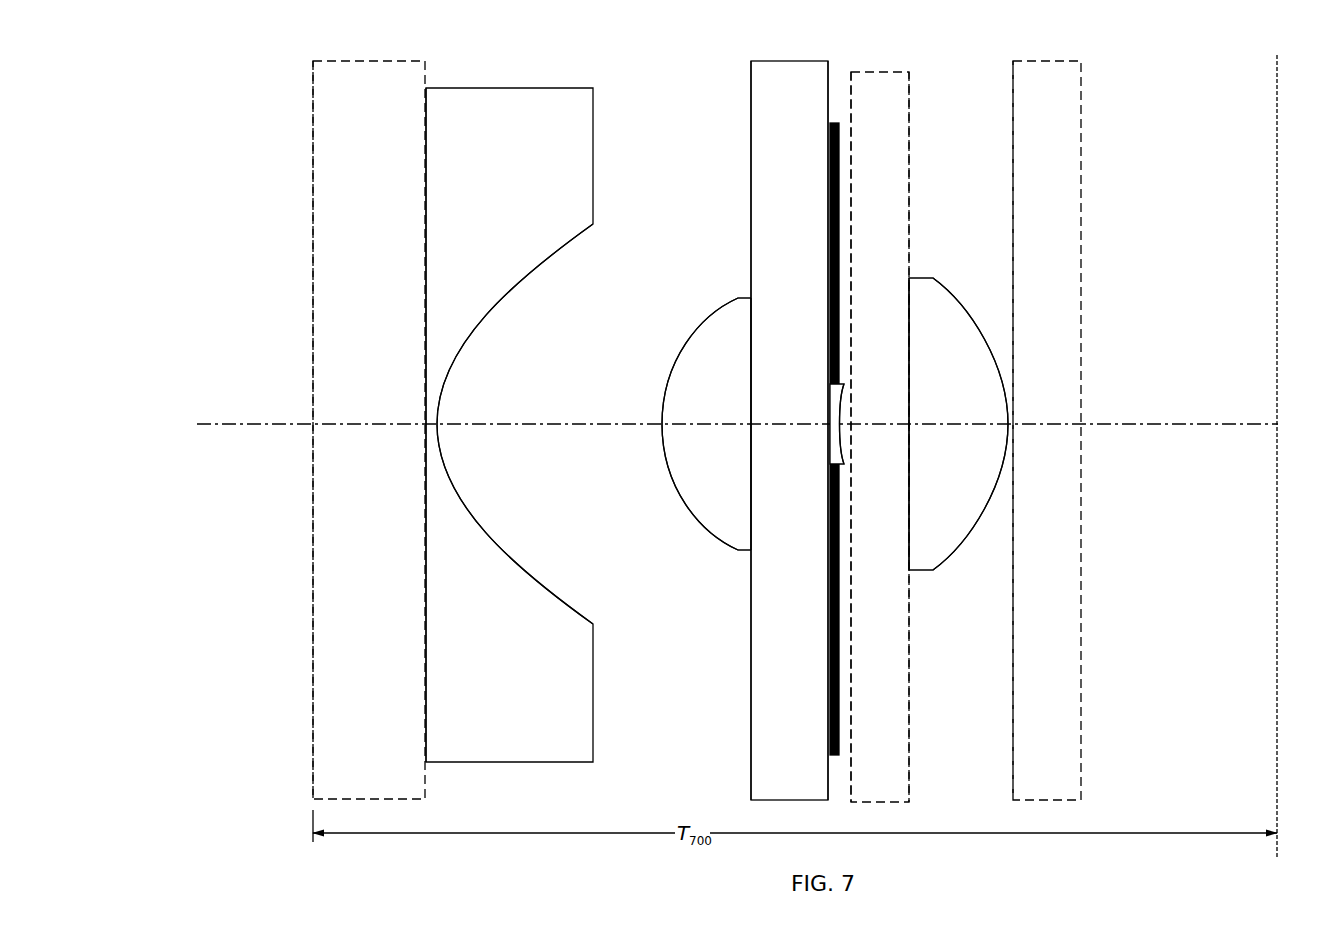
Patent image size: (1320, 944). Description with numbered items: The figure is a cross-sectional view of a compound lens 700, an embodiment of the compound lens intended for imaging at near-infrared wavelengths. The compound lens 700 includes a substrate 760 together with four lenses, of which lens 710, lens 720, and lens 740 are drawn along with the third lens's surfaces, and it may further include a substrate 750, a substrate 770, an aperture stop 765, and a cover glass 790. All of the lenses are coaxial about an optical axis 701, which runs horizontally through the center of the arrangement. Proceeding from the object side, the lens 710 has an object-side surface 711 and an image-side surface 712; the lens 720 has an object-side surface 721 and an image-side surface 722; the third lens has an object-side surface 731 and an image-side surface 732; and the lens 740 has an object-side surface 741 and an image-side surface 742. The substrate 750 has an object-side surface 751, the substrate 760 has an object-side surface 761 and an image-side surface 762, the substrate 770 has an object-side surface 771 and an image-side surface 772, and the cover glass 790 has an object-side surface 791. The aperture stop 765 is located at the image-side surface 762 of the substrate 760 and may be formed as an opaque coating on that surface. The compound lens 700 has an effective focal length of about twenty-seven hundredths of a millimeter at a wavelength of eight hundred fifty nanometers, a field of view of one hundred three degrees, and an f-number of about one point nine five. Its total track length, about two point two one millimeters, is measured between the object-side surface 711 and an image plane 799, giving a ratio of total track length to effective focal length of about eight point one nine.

The compound lens 700 is at (228, 45).
The optical axis 701 is at (200, 422).
The lens 710 is at (455, 679).
The object-side surface 711 is at (426, 160).
The image-side surface 712 is at (460, 493).
The lens 720 is at (691, 486).
The object-side surface 721 is at (662, 413).
The image-side surface 722 is at (752, 316).
The object-side surface 731 is at (829, 390).
The image-side surface 732 is at (845, 398).
The lens 740 is at (930, 495).
The object-side surface 741 is at (908, 282).
The image-side surface 742 is at (971, 538).
The substrate 750 is at (351, 787).
The object-side surface 751 is at (313, 113).
The substrate 760 is at (771, 788).
The object-side surface 761 is at (751, 70).
The image-side surface 762 is at (829, 67).
The aperture stop 765 is at (829, 197).
The substrate 770 is at (861, 791).
The object-side surface 771 is at (850, 788).
The image-side surface 772 is at (911, 82).
The cover glass 790 is at (1028, 788).
The object-side surface 791 is at (1013, 100).
The image plane 799 is at (1277, 82).